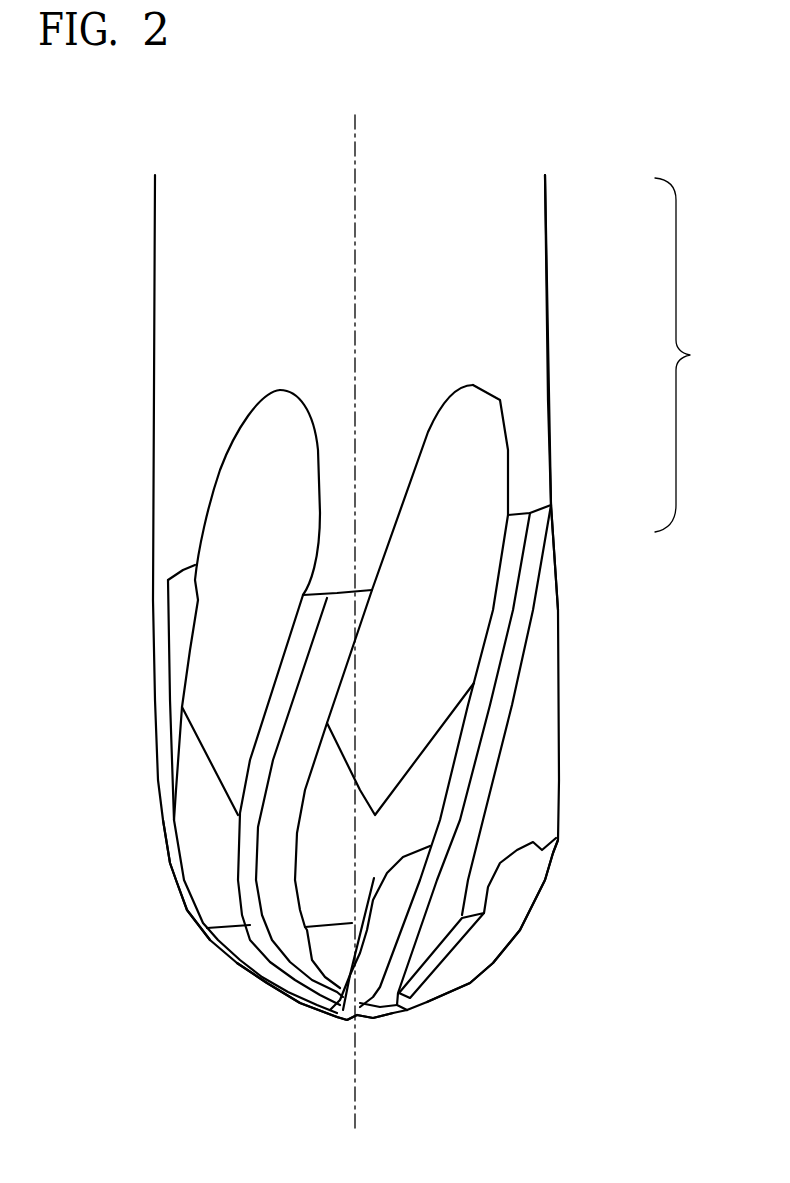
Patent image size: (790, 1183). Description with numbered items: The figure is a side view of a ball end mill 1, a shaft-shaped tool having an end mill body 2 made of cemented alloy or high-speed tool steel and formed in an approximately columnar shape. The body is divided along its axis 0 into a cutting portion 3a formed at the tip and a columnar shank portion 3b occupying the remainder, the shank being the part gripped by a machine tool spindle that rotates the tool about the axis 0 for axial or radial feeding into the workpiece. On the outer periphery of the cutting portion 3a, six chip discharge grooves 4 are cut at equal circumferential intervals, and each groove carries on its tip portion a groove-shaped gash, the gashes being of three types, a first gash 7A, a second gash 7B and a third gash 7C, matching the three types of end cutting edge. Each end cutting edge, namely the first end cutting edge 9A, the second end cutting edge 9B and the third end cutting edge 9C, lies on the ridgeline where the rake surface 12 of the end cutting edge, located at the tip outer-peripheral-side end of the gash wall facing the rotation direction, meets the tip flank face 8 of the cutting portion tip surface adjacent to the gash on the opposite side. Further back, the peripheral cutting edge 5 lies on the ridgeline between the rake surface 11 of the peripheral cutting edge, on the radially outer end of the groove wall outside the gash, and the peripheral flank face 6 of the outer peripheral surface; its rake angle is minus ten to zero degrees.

The axis 0 is at (357, 128).
The ball end mill 1 is at (664, 125).
The end mill body 2 is at (684, 355).
The cutting portion 3a is at (606, 550).
The shank portion 3b is at (578, 200).
The chip discharge groove 4 is at (246, 545).
The peripheral cutting edge 5 is at (440, 790).
The peripheral flank face 6 is at (300, 653).
The first gash 7A is at (374, 1035).
The second gash 7B is at (497, 927).
The third gash 7C is at (364, 969).
The tip flank face 8 is at (432, 863).
The first end cutting edge 9A is at (267, 967).
The second end cutting edge 9B is at (467, 987).
The third end cutting edge 9C is at (370, 943).
The rake surface of the peripheral cutting edge 11 is at (538, 717).
The rake surface of the end cutting edge 12 is at (475, 953).